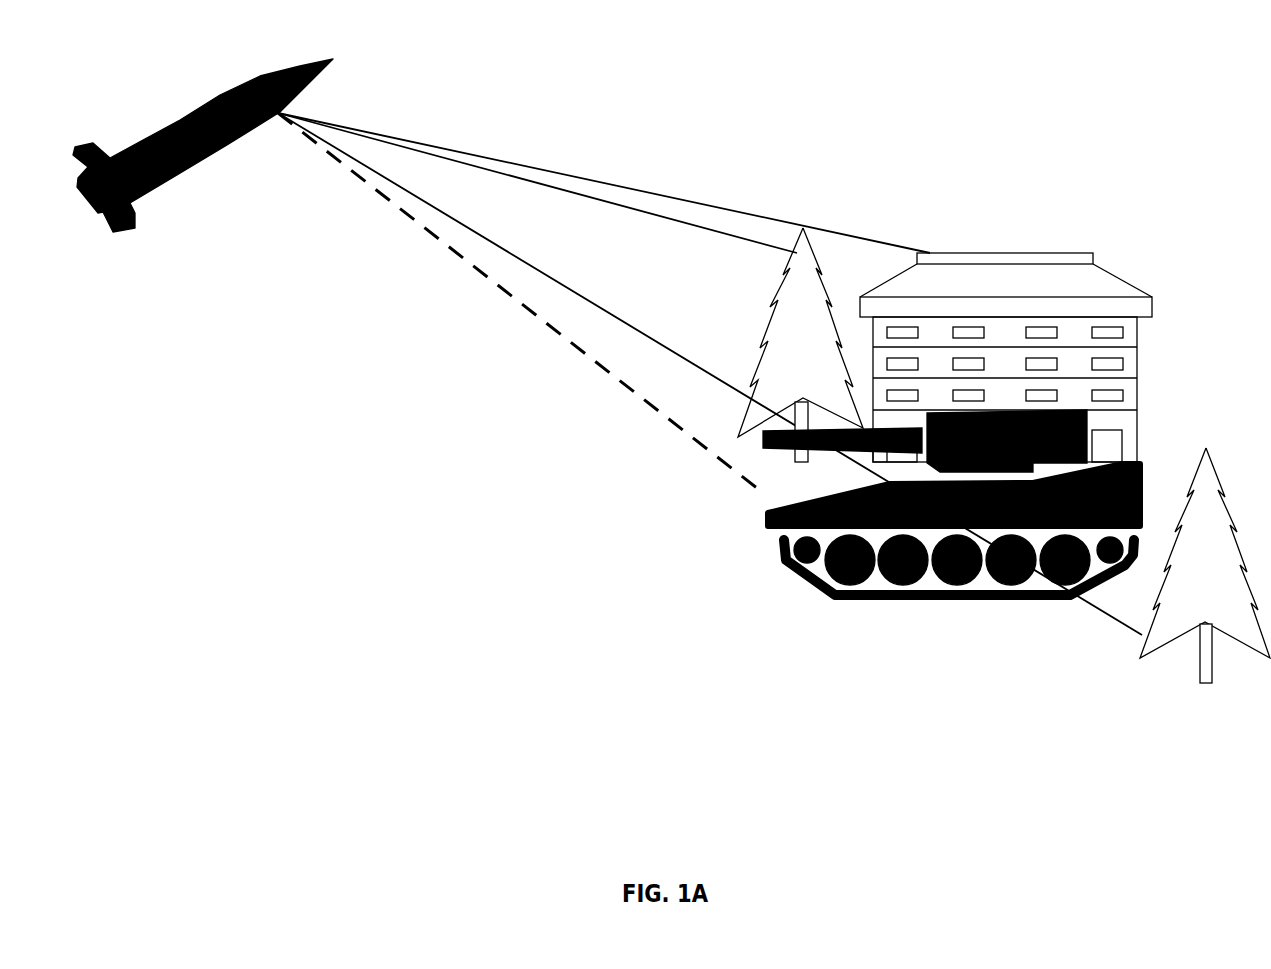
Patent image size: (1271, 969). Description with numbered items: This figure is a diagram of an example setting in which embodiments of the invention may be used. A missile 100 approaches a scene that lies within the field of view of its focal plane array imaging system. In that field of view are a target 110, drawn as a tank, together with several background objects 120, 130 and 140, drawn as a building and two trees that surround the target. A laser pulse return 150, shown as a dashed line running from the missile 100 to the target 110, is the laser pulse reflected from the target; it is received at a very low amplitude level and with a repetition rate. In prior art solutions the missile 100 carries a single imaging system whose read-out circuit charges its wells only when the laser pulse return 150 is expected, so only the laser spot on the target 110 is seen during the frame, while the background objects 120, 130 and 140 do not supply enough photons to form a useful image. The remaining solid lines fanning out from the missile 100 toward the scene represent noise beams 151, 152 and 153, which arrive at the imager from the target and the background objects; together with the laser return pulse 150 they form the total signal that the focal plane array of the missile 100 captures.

The missile 100 is at (203, 141).
The target 110 is at (835, 582).
The background object 120 is at (1087, 290).
The background object 130 is at (1202, 460).
The background object 140 is at (805, 367).
The laser pulse return 150 is at (528, 307).
The noise beam 151 is at (664, 343).
The noise beam 152 is at (728, 240).
The noise beam 153 is at (529, 172).